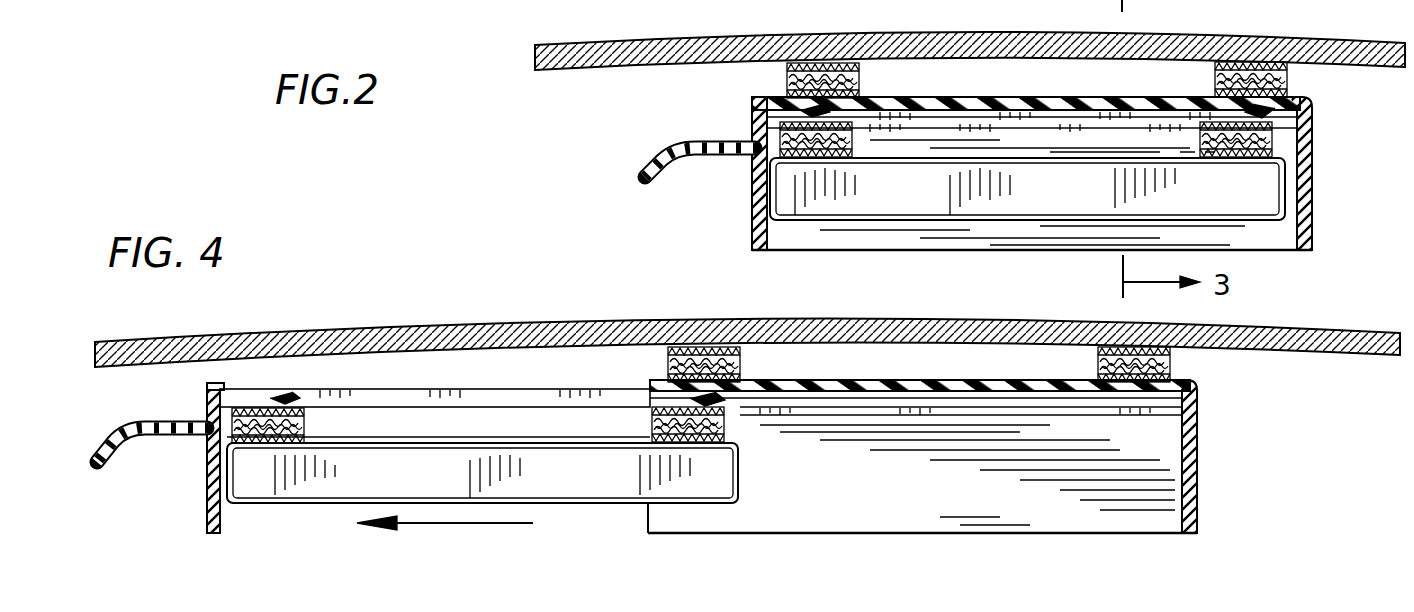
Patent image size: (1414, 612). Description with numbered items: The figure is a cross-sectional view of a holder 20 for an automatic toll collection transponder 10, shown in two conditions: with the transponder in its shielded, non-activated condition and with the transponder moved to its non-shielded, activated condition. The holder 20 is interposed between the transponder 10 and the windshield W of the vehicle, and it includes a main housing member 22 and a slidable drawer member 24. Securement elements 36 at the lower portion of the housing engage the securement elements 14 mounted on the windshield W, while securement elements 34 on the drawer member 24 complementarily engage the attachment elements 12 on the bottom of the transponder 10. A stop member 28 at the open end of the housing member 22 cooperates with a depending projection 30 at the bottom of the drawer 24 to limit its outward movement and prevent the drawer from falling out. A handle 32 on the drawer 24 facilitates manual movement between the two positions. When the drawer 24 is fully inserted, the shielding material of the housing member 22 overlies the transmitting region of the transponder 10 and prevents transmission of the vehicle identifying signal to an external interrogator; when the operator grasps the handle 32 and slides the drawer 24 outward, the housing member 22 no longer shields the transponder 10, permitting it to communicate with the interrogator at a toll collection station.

In FIG. 2, the windshield W is at (1175, 42).
In FIG. 4, the windshield W is at (747, 342).
In FIG. 2, the transponder 10 is at (1025, 197).
In FIG. 4, the transponder 10 is at (580, 480).
In FIG. 2, the attachment elements 12 is at (752, 178).
In FIG. 4, the attachment elements 12 is at (313, 433).
In FIG. 2, the attachment elements 14 is at (872, 70).
In FIG. 4, the attachment elements 14 is at (745, 360).
In FIG. 2, the holder 20 is at (1322, 188).
In FIG. 2, the main housing member 22 is at (1314, 232).
In FIG. 4, the main housing member 22 is at (1198, 439).
In FIG. 2, the drawer member 24 is at (754, 237).
In FIG. 4, the drawer member 24 is at (549, 398).
In FIG. 2, the stop member 28 is at (800, 100).
In FIG. 2, the depending projection 30 is at (842, 112).
In FIG. 4, the depending projection 30 is at (740, 407).
In FIG. 4, the handle 32 is at (158, 440).
In FIG. 2, the securement elements 34 is at (1285, 128).
In FIG. 4, the securement elements 34 is at (313, 428).
In FIG. 2, the securement elements 36 is at (860, 90).
In FIG. 4, the securement elements 36 is at (668, 373).